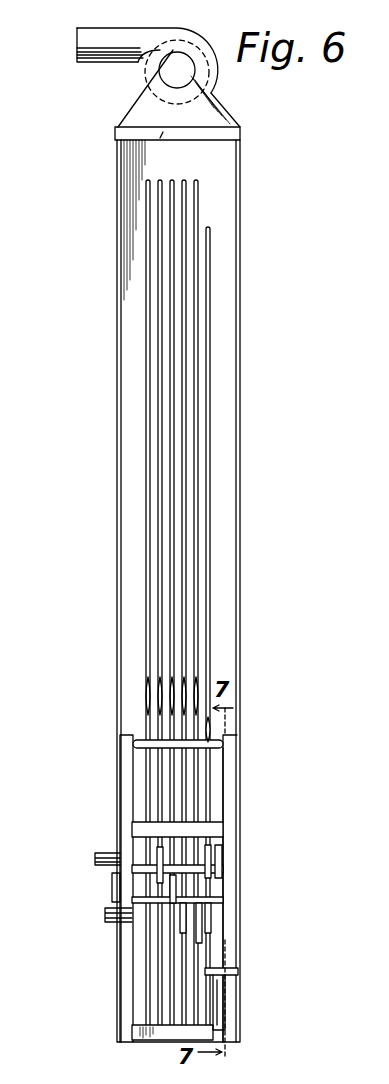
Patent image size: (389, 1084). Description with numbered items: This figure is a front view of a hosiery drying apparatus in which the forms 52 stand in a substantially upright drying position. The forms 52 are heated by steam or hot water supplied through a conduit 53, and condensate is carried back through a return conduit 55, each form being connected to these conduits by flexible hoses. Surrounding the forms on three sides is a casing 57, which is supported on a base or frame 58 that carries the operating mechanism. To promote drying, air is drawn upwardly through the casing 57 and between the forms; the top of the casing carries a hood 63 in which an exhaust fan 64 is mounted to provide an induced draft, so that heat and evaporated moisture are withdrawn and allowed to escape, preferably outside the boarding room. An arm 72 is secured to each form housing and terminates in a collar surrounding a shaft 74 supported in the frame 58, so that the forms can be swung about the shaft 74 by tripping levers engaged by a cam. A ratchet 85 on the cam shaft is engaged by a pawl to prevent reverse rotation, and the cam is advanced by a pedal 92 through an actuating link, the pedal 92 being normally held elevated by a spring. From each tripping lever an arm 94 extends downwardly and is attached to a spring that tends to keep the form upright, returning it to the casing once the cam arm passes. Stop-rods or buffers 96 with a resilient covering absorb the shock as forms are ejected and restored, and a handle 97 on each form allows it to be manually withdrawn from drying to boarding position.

The forms 52 is at (200, 205).
The conduit 53 is at (95, 857).
The return conduit 55 is at (105, 912).
The casing 57 is at (242, 247).
The base or frame 58 is at (242, 772).
The hood 63 is at (235, 115).
The exhaust fan 64 is at (219, 76).
The arm 72 is at (145, 785).
The shaft 74 is at (112, 887).
The ratchet 85 is at (217, 870).
The pedal 92 is at (225, 965).
The arm 94 is at (200, 950).
The stop-rods or buffers 96 is at (215, 742).
The handle 97 is at (142, 693).